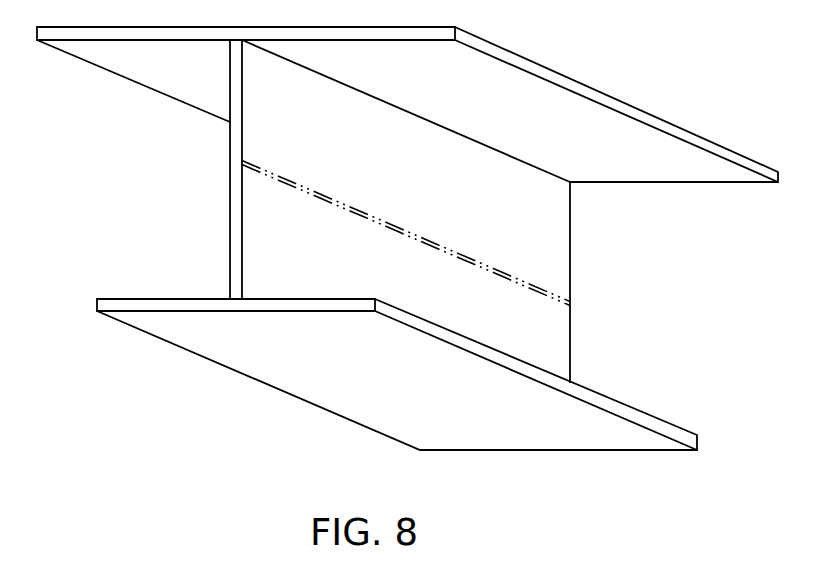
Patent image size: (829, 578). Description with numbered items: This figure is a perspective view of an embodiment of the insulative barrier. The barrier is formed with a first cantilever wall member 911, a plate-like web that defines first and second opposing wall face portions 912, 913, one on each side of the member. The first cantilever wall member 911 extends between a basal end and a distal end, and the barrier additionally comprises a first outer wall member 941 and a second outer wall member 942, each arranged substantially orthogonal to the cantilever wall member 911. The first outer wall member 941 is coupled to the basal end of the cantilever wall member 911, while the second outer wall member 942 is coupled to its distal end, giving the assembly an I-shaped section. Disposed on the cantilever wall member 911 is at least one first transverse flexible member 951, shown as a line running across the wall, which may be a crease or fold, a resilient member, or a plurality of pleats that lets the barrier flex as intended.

The first cantilever wall member 911 is at (340, 163).
The first opposing wall face portion 912 is at (540, 235).
The second opposing wall face portion 913 is at (230, 234).
The first outer wall member 941 is at (507, 113).
The second outer wall member 942 is at (353, 380).
The first transverse flexible member 951 is at (556, 297).